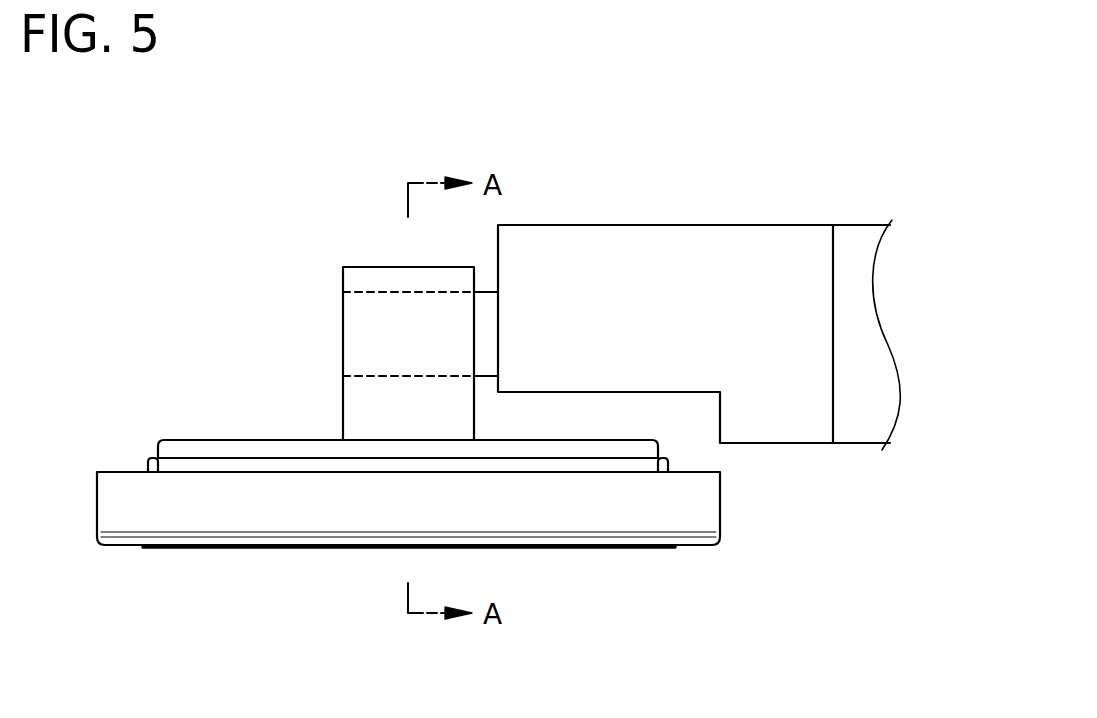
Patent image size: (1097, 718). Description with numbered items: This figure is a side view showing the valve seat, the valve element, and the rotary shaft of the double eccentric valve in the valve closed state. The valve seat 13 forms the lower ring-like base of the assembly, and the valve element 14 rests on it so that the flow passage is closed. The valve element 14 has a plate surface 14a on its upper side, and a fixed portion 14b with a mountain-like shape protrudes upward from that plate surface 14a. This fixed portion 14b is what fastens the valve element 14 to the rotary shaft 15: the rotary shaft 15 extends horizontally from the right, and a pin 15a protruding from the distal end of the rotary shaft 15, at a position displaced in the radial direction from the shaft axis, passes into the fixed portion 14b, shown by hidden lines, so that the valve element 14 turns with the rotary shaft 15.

The valve seat 13 is at (720, 513).
The valve element 14 is at (155, 448).
The plate surface 14a is at (215, 440).
The fixed portion 14b is at (362, 405).
The rotary shaft 15 is at (726, 225).
The pin 15a is at (362, 305).